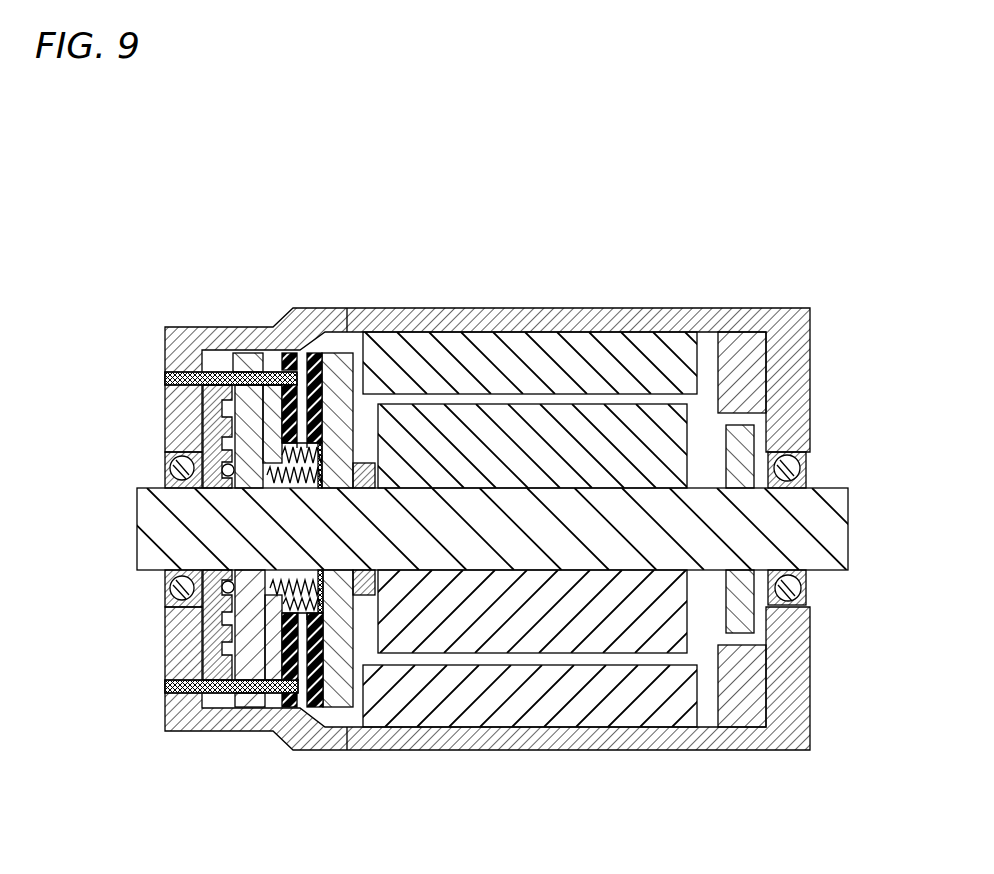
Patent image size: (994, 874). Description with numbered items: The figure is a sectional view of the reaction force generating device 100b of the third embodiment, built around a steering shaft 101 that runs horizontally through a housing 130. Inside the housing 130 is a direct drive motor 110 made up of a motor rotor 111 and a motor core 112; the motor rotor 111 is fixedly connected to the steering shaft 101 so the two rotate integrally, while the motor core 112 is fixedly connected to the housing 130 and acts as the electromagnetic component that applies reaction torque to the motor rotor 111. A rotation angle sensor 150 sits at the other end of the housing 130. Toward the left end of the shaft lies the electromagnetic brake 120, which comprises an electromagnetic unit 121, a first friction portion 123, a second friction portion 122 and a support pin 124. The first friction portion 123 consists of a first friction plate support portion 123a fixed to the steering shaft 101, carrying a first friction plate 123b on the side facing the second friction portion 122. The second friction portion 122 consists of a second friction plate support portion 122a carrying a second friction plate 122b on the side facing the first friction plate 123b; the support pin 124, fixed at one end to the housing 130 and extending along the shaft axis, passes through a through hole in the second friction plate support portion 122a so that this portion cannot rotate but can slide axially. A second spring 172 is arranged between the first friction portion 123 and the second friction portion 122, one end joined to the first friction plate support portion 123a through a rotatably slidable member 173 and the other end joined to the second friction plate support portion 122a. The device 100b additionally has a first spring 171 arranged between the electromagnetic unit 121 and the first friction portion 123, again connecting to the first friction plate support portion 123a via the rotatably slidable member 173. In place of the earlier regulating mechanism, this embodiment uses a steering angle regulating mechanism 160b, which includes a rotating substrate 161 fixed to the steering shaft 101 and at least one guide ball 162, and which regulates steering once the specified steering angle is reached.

The reaction force generating device 100b is at (806, 209).
The steering shaft 101 is at (826, 518).
The direct drive motor 110 is at (588, 220).
The motor rotor 111 is at (488, 367).
The motor core 112 is at (432, 445).
The electromagnetic brake 120 is at (135, 108).
The electromagnetic unit 121 is at (213, 452).
The second friction portion 122 is at (189, 168).
The second friction plate support portion 122a is at (263, 413).
The second friction plate 122b is at (288, 405).
The first friction portion 123 is at (189, 97).
The first friction plate support portion 123a is at (338, 370).
The first friction plate 123b is at (315, 365).
The support pin 124 is at (250, 443).
The housing 130 is at (790, 379).
The rotation angle sensor 150 is at (743, 432).
The steering angle regulating mechanism 160b is at (94, 350).
The rotating substrate 161 is at (210, 452).
The guide ball 162 is at (224, 469).
The first spring 171 is at (298, 598).
The second spring 172 is at (310, 612).
The rotatably slidable member 173 is at (318, 583).